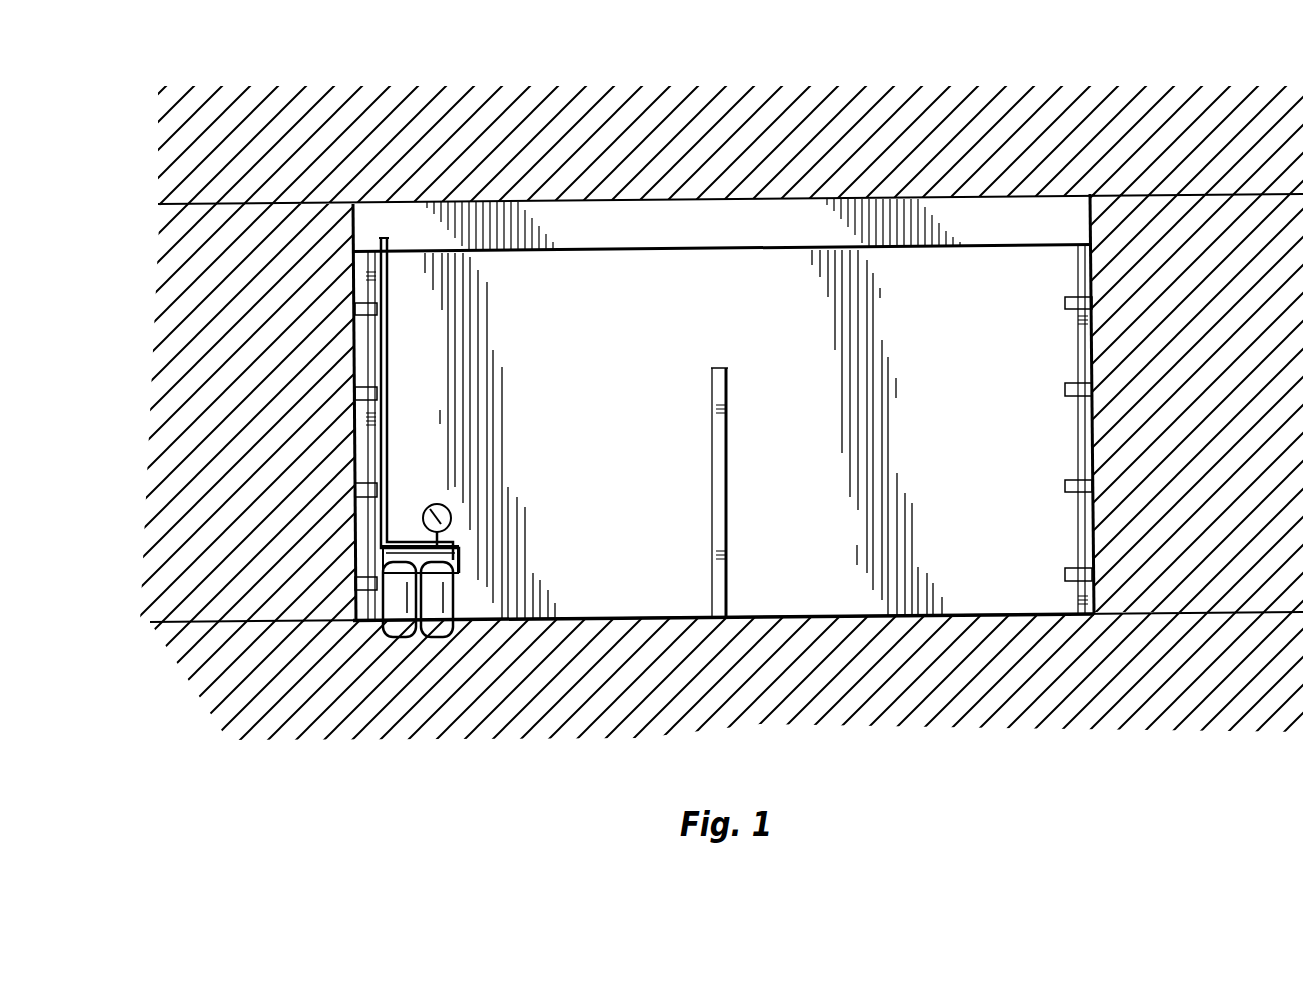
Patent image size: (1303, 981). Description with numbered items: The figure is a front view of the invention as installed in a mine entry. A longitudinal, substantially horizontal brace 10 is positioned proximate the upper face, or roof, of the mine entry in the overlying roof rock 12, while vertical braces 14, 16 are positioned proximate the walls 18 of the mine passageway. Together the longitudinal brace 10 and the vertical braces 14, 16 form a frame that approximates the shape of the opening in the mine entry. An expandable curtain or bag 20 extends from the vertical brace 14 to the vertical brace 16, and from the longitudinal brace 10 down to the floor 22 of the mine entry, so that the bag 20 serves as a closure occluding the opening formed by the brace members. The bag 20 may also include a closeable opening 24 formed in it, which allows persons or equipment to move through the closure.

The longitudinal brace 10 is at (1040, 212).
The overlying roof rock 12 is at (874, 141).
The vertical brace 14 is at (1082, 363).
The vertical brace 16 is at (360, 347).
The walls 18 is at (192, 625).
The expandable curtain or bag 20 is at (1004, 542).
The floor 22 is at (779, 683).
The closeable opening 24 is at (720, 460).